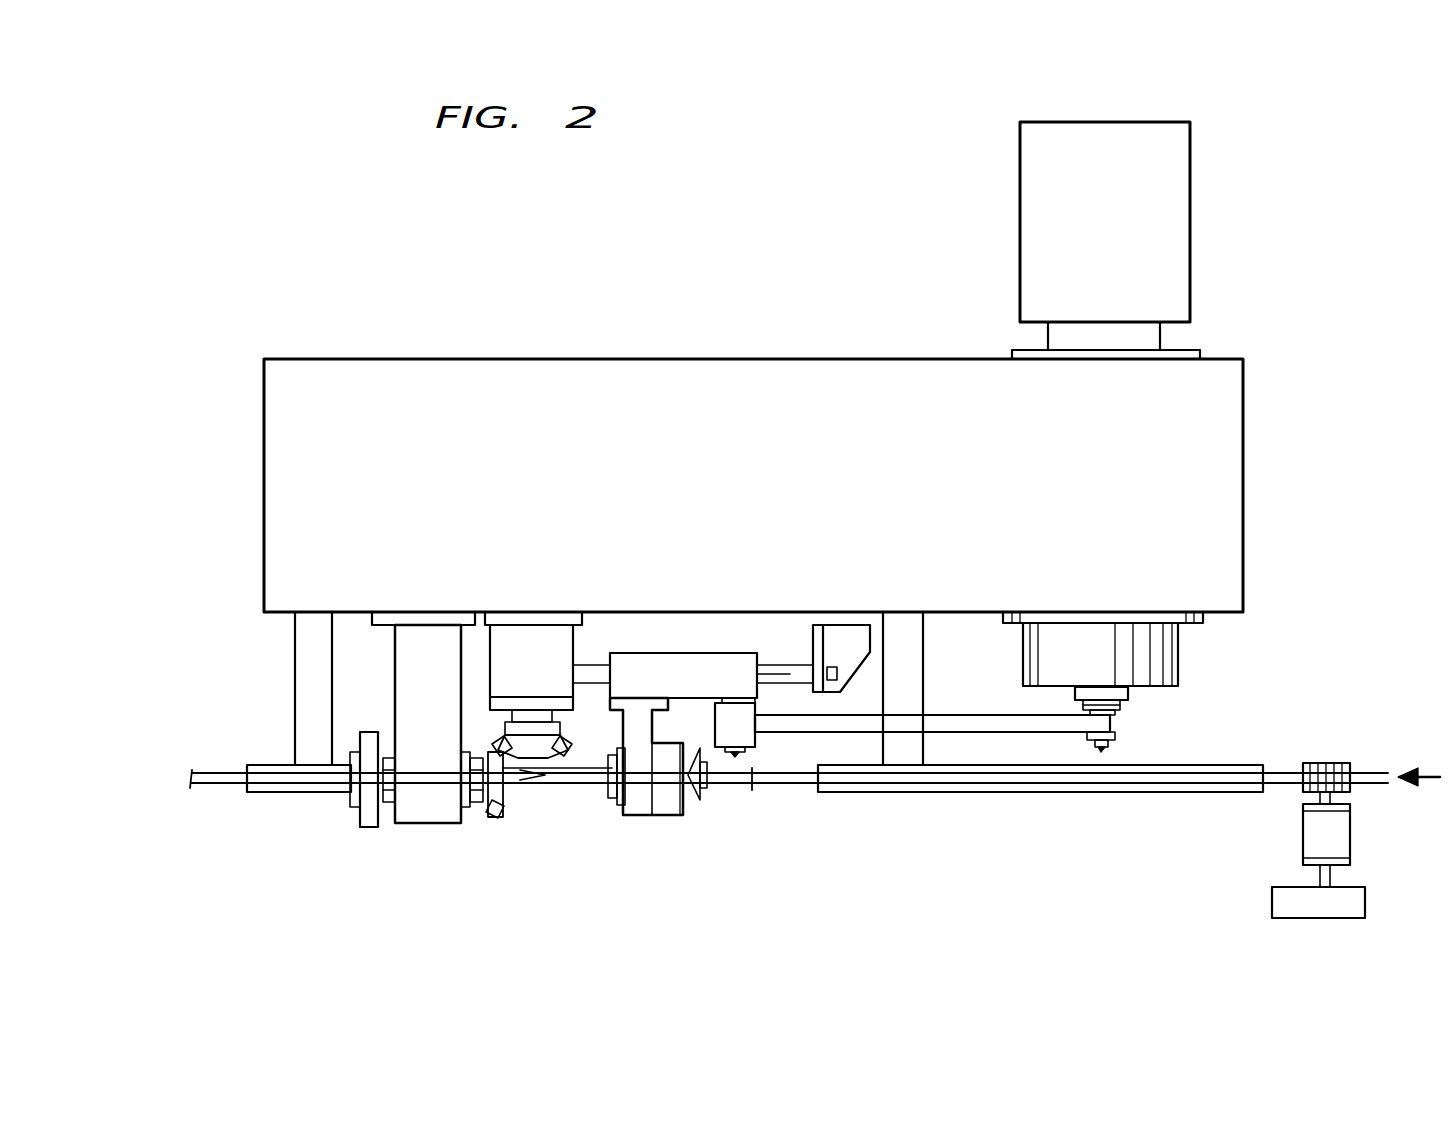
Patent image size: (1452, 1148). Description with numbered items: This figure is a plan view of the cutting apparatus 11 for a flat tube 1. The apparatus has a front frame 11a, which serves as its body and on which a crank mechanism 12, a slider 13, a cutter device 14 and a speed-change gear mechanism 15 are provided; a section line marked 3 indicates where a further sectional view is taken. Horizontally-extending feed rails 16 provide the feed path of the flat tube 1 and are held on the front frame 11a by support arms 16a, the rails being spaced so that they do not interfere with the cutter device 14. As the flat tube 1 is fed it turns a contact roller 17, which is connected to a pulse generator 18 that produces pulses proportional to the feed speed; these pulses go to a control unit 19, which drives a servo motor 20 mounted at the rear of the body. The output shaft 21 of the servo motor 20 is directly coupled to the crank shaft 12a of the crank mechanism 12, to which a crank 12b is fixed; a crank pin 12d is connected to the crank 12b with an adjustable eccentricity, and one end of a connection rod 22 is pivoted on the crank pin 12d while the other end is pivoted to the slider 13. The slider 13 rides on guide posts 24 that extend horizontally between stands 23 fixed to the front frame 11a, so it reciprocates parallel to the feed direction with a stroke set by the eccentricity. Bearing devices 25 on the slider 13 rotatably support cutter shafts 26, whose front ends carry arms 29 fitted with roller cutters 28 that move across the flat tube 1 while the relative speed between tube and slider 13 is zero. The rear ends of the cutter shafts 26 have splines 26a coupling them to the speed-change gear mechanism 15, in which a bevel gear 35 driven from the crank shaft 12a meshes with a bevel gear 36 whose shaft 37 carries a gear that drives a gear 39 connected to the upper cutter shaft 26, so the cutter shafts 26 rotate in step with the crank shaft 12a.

The flat tube 1 is at (795, 782).
The section line 3- 3 is at (840, 692).
The cutting apparatus 11 is at (712, 320).
The front frame 11a is at (1222, 618).
The crank mechanism 12 is at (1030, 752).
The crank shaft 12a is at (1165, 664).
The crank 12b is at (1128, 694).
The crank pin 12d is at (1101, 752).
The slider 13 is at (670, 667).
The cutter device 14 is at (603, 835).
The speed-change gear mechanism 15 is at (448, 842).
The feed rails 16 is at (290, 792).
The support arms 16a is at (300, 676).
The contact roller 17 is at (1336, 770).
The pulse generator 18 is at (1335, 831).
The control unit 19 is at (1350, 904).
The servo motor 20 is at (1114, 233).
The output shaft 21 is at (1142, 340).
The connection rod 22 is at (975, 722).
The stands 23 is at (845, 645).
The guide posts 24 is at (790, 668).
The bearing devices 25 is at (638, 800).
The cutter shafts 26 is at (570, 790).
The splines 26a is at (533, 790).
The roller cutters 28 is at (702, 790).
The arms 29 is at (690, 795).
The bevel gear 35 is at (548, 740).
The bevel gear 36 is at (477, 757).
The shaft 37 is at (432, 800).
The gear 39 is at (368, 812).